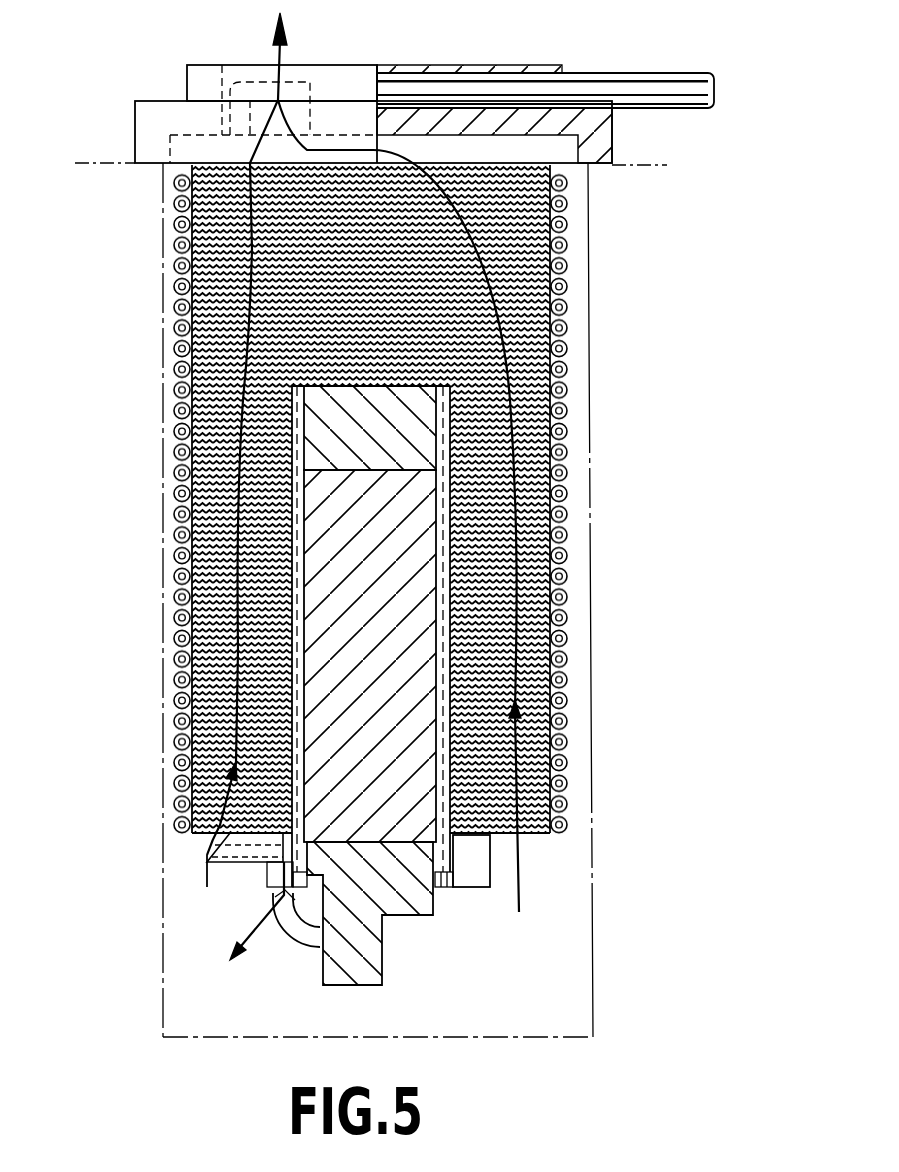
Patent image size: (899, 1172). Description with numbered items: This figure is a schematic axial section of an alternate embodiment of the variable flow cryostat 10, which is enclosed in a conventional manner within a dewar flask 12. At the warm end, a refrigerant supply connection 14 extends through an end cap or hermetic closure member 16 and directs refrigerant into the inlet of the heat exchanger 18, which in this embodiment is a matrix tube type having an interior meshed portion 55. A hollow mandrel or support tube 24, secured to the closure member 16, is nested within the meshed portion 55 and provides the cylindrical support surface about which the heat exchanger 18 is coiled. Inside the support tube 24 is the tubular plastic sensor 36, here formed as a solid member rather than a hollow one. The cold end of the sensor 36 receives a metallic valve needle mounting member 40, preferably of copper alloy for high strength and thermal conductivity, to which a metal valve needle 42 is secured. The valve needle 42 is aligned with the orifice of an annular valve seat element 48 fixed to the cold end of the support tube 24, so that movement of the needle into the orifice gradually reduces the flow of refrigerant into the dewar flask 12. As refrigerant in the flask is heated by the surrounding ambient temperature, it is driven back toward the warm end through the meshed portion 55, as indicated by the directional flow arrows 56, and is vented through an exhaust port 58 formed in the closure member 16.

The variable flow cryostat 10 is at (125, 456).
The dewar flask 12 is at (593, 263).
The refrigerant supply connection 14 is at (663, 70).
The closure member 16 is at (612, 137).
The coiled tube heat exchanger 18 is at (568, 475).
The support tube 24 is at (290, 592).
The plastic sensor 36 is at (340, 683).
The valve needle mounting member 40 is at (403, 918).
The valve needle 42 is at (293, 957).
The valve seat element 48 is at (473, 893).
The meshed portion 55 is at (560, 353).
The directional flow arrows 56 is at (277, 53).
The exhaust port 58 is at (317, 70).